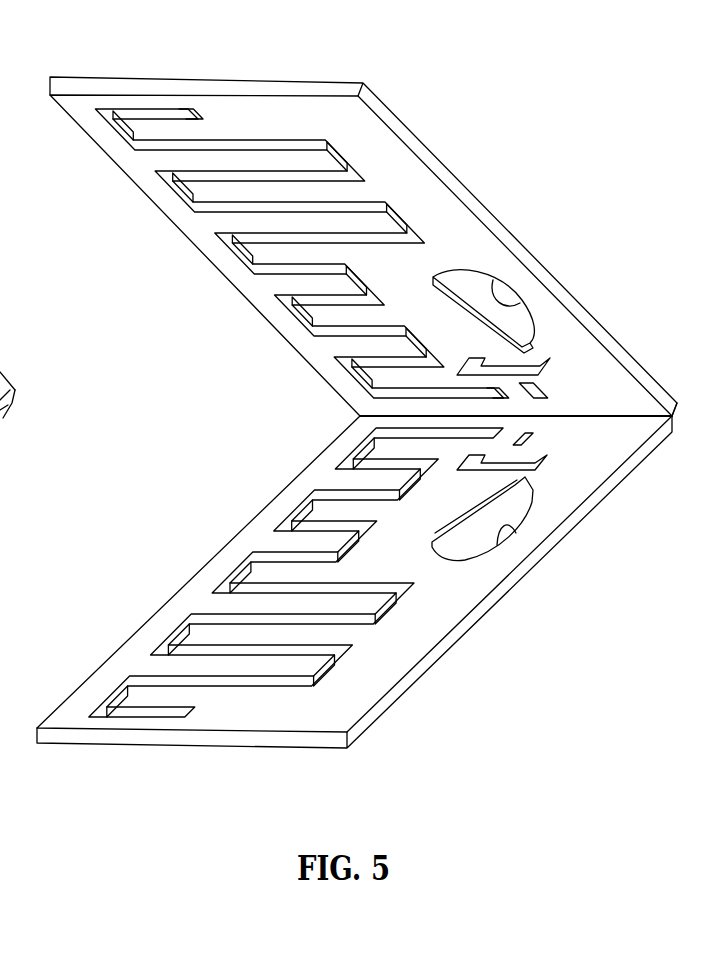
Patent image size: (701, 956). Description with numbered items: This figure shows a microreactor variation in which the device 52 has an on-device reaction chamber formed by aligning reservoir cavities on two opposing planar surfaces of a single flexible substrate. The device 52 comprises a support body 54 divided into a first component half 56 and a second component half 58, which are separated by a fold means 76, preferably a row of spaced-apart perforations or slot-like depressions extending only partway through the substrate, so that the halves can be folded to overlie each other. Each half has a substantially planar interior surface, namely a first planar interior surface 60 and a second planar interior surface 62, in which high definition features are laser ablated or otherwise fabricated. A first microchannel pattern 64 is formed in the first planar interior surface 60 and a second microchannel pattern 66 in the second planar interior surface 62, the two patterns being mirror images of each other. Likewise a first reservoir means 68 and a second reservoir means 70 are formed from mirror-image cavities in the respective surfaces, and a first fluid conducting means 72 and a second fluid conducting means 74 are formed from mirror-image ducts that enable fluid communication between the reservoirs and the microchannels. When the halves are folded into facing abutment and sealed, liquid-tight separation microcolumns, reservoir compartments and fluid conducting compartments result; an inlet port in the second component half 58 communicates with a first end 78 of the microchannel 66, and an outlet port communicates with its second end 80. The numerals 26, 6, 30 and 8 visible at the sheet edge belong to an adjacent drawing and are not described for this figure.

The microreactor device 52 is at (130, 773).
The support body 54 is at (300, 363).
The first component half 56 is at (595, 505).
The second component half 58 is at (390, 122).
The first planar interior surface 60 is at (440, 610).
The second planar interior surface 62 is at (418, 192).
The first microchannel pattern 64 is at (305, 503).
The second microchannel pattern 66 is at (177, 190).
The first reservoir means 68 is at (516, 533).
The second reservoir means 70 is at (493, 281).
The first fluid conducting means 72 is at (436, 562).
The second fluid conducting means 74 is at (436, 270).
The fold means 76 is at (596, 416).
The first end of microchannel 78 is at (197, 117).
The second end of microchannel 80 is at (495, 388).
The adjacent figure element 26 is at (0, 330).
The adjacent figure element 6 is at (0, 422).
The adjacent figure element 30 is at (0, 473).
The adjacent figure element 8 is at (8, 466).